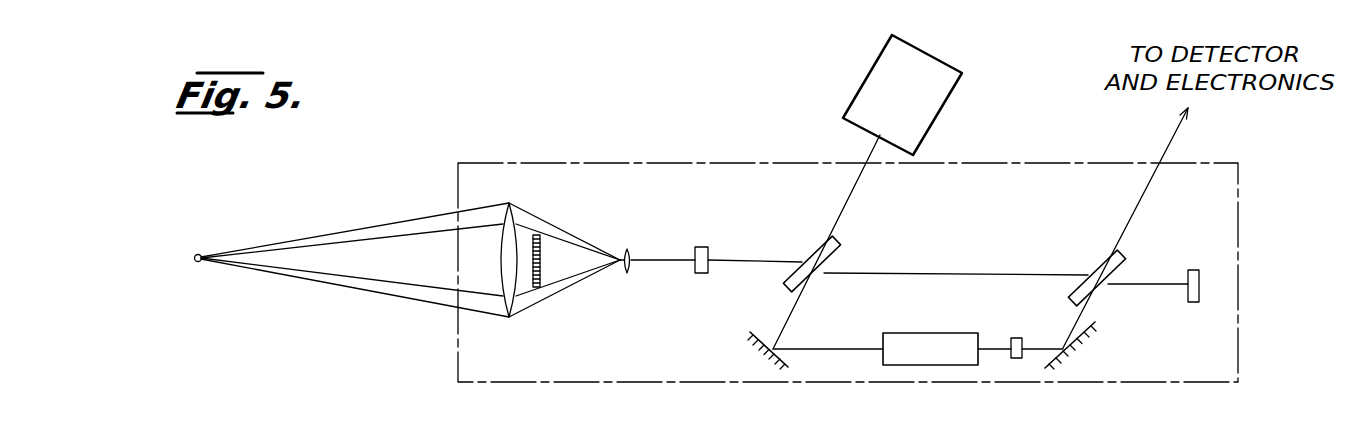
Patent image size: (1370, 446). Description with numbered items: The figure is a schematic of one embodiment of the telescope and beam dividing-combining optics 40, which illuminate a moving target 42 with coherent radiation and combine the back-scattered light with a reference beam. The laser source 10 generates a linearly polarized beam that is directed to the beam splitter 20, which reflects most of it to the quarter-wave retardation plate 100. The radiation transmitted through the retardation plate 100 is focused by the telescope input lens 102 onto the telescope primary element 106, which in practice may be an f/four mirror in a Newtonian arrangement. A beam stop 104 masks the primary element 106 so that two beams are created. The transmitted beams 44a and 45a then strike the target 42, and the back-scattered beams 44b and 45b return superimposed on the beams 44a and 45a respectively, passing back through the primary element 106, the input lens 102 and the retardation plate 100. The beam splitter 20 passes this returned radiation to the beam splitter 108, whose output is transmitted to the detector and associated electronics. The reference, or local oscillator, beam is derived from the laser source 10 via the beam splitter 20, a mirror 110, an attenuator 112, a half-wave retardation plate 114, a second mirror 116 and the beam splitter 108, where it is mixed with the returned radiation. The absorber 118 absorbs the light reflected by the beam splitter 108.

The laser source 10 is at (860, 78).
The beam splitter 20 is at (838, 247).
The telescope and beam dividing-combining optics 40 is at (1233, 163).
The moving target 42 is at (193, 257).
The transmitted optical signal 44a is at (416, 226).
The target scattered signal 44b is at (357, 237).
The transmitted optical signal 45a is at (393, 285).
The target scattered signal 45b is at (300, 276).
The quarter wave retardation plate 100 is at (706, 248).
The telescope input lens 102 is at (627, 248).
The beam stop 104 is at (541, 256).
The telescope primary element 106 is at (513, 218).
The beam splitter 108 is at (1120, 262).
The mirror 110 is at (768, 332).
The attenuator 112 is at (960, 333).
The half wave retardation plate 114 is at (1017, 338).
The second mirror 116 is at (1093, 325).
The absorber 118 is at (1194, 268).